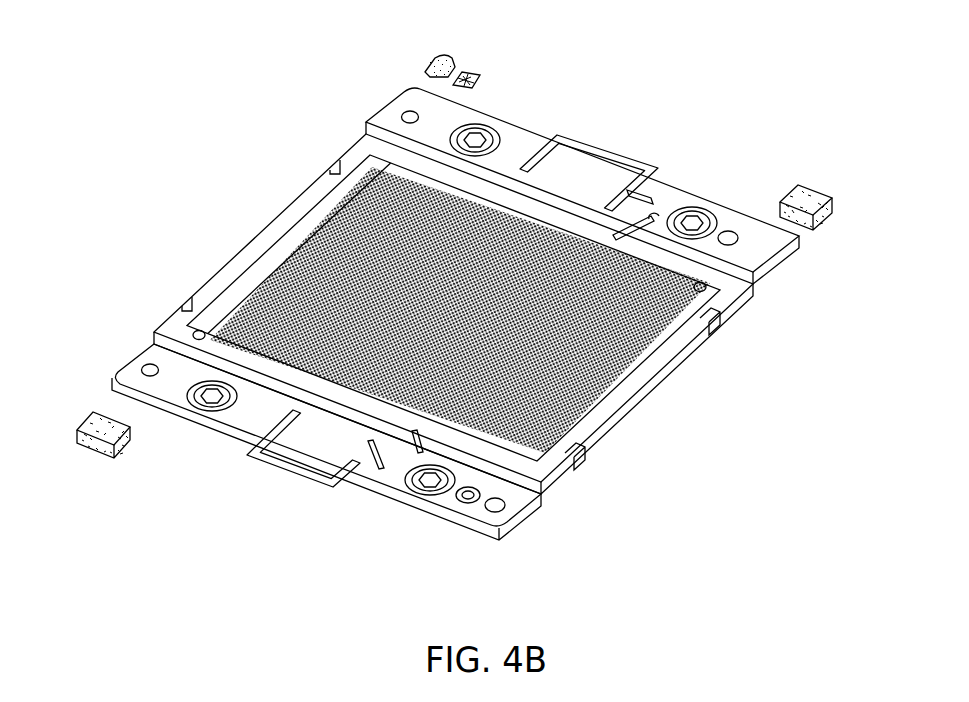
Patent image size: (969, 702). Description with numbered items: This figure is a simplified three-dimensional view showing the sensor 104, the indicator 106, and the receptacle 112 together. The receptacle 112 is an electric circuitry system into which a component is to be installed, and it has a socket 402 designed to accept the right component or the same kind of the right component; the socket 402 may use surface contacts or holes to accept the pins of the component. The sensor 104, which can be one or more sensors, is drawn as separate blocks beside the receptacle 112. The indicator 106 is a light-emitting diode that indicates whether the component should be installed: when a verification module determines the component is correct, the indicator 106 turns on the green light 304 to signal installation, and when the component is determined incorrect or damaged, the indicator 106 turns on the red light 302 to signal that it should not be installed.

The sensor 104 is at (812, 190).
The indicator 106 is at (457, 55).
The receptacle 112 is at (285, 212).
The red light 302 is at (436, 68).
The green light 304 is at (478, 73).
The socket 402 is at (268, 284).